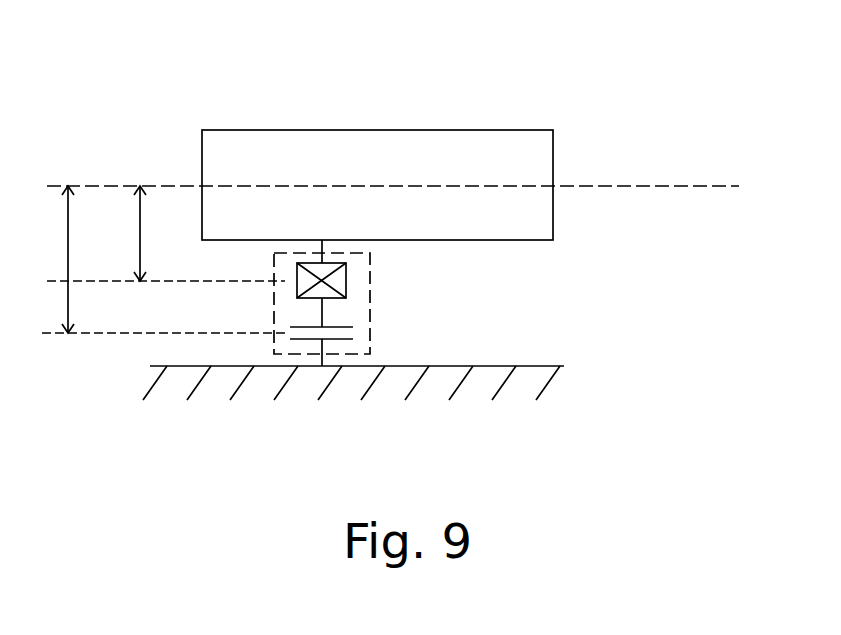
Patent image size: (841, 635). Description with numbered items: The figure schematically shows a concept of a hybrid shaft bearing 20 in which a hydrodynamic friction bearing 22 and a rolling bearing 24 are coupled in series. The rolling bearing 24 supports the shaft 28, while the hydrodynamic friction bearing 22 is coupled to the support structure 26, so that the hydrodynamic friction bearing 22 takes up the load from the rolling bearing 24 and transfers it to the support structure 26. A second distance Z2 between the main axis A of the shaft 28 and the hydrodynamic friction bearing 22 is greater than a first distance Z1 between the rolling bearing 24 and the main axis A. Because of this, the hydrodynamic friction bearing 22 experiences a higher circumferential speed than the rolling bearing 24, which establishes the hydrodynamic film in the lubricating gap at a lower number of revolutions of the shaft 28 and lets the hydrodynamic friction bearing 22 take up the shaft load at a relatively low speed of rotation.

The hybrid shaft bearing 20 is at (273, 292).
The hydrodynamic friction bearing 22 is at (353, 326).
The rolling bearing 24 is at (346, 273).
The support structure 26 is at (543, 366).
The shaft 28 is at (515, 130).
The main axis A is at (702, 186).
The first distance Z1 is at (166, 233).
The second distance Z2 is at (163, 259).